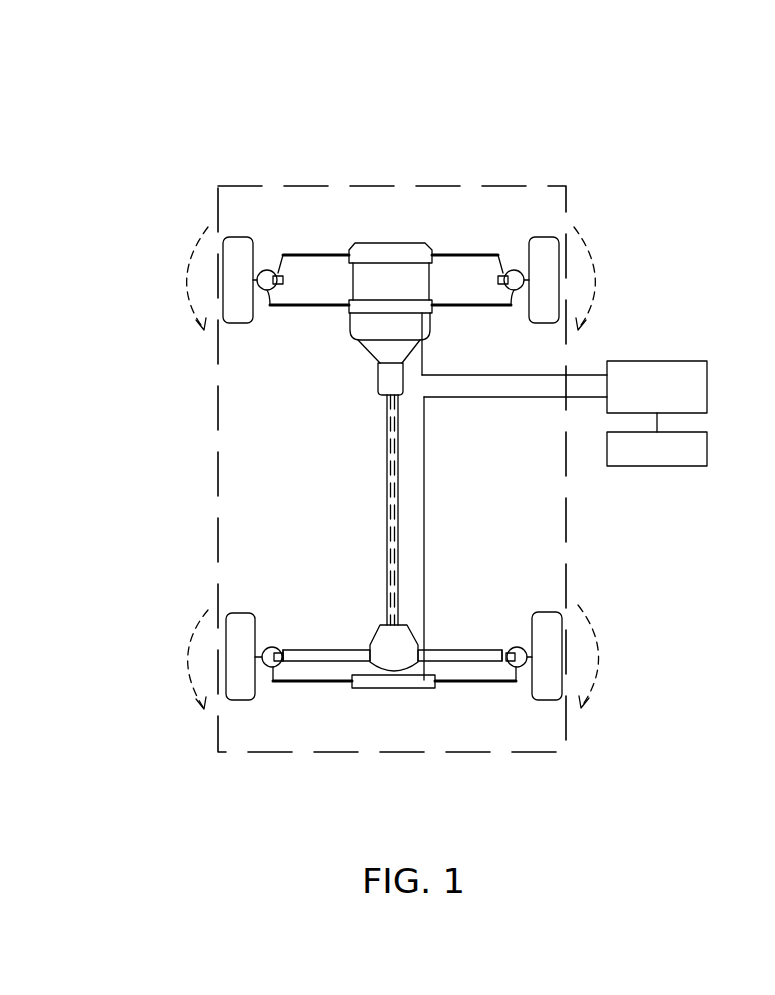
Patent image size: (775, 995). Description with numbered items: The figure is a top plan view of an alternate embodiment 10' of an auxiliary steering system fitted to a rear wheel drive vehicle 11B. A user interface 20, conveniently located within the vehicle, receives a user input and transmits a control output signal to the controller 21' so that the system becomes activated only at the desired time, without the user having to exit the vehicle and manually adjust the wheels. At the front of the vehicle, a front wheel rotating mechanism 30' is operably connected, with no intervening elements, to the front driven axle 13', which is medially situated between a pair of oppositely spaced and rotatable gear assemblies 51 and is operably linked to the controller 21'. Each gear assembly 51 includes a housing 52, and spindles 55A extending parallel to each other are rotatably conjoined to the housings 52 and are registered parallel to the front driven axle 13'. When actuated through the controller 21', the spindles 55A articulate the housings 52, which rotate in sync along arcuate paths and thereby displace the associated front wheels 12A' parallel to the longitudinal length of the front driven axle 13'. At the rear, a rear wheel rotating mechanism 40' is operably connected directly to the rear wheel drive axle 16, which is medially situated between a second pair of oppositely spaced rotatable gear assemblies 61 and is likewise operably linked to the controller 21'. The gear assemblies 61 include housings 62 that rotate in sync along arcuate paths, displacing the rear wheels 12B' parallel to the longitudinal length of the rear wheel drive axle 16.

The alternate embodiment of auxiliary vehicle steering system 10' is at (642, 79).
The rear wheel drive vehicle 11B is at (565, 490).
The front wheels 12A' is at (425, 301).
The rear wheels 12B' is at (430, 636).
The front driven axle 13' is at (390, 224).
The rear wheel drive axle 16 is at (368, 647).
The user interface 20 is at (683, 466).
The controller 21' is at (592, 488).
The front wheel rotating mechanism 30' is at (407, 173).
The rear wheel rotating mechanism 40' is at (389, 610).
The gear assemblies 51 is at (272, 297).
The housings 52 is at (272, 247).
The spindles 55A is at (310, 256).
The gear assemblies 61 is at (281, 668).
The housings 62 is at (273, 668).